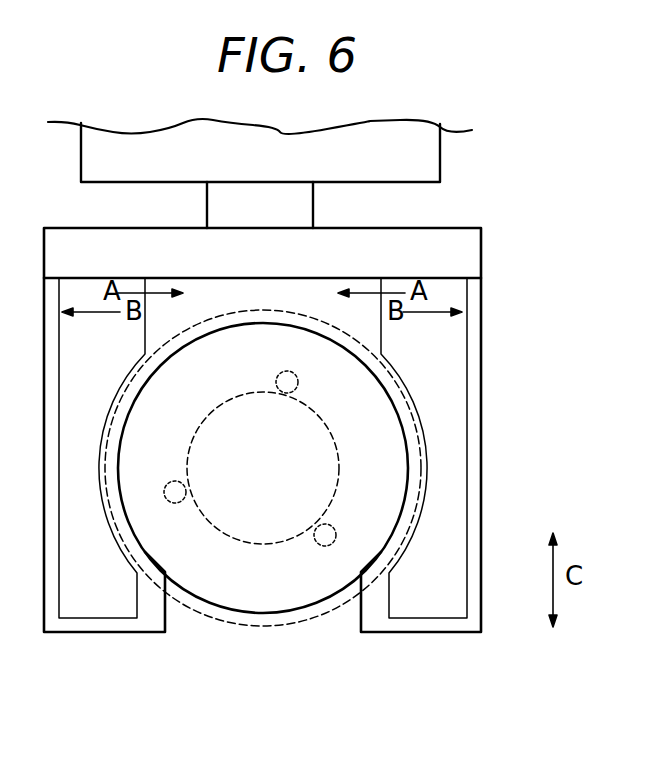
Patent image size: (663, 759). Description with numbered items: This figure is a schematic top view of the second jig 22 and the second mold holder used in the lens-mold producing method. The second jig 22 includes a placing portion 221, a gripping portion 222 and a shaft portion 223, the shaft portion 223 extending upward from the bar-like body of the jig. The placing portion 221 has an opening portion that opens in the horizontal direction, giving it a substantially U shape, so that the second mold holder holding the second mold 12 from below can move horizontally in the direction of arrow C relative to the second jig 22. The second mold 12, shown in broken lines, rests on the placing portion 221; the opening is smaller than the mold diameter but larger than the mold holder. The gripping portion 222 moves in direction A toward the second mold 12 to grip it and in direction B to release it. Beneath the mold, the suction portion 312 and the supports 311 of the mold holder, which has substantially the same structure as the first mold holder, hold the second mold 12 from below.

The second jig 22 is at (452, 248).
The shaft portion 223 is at (292, 200).
The placing portion 221 is at (382, 608).
The gripping portion 222 is at (97, 593).
The second mold 12 is at (292, 610).
The suction portion 312 is at (228, 528).
The supports 311 is at (323, 546).